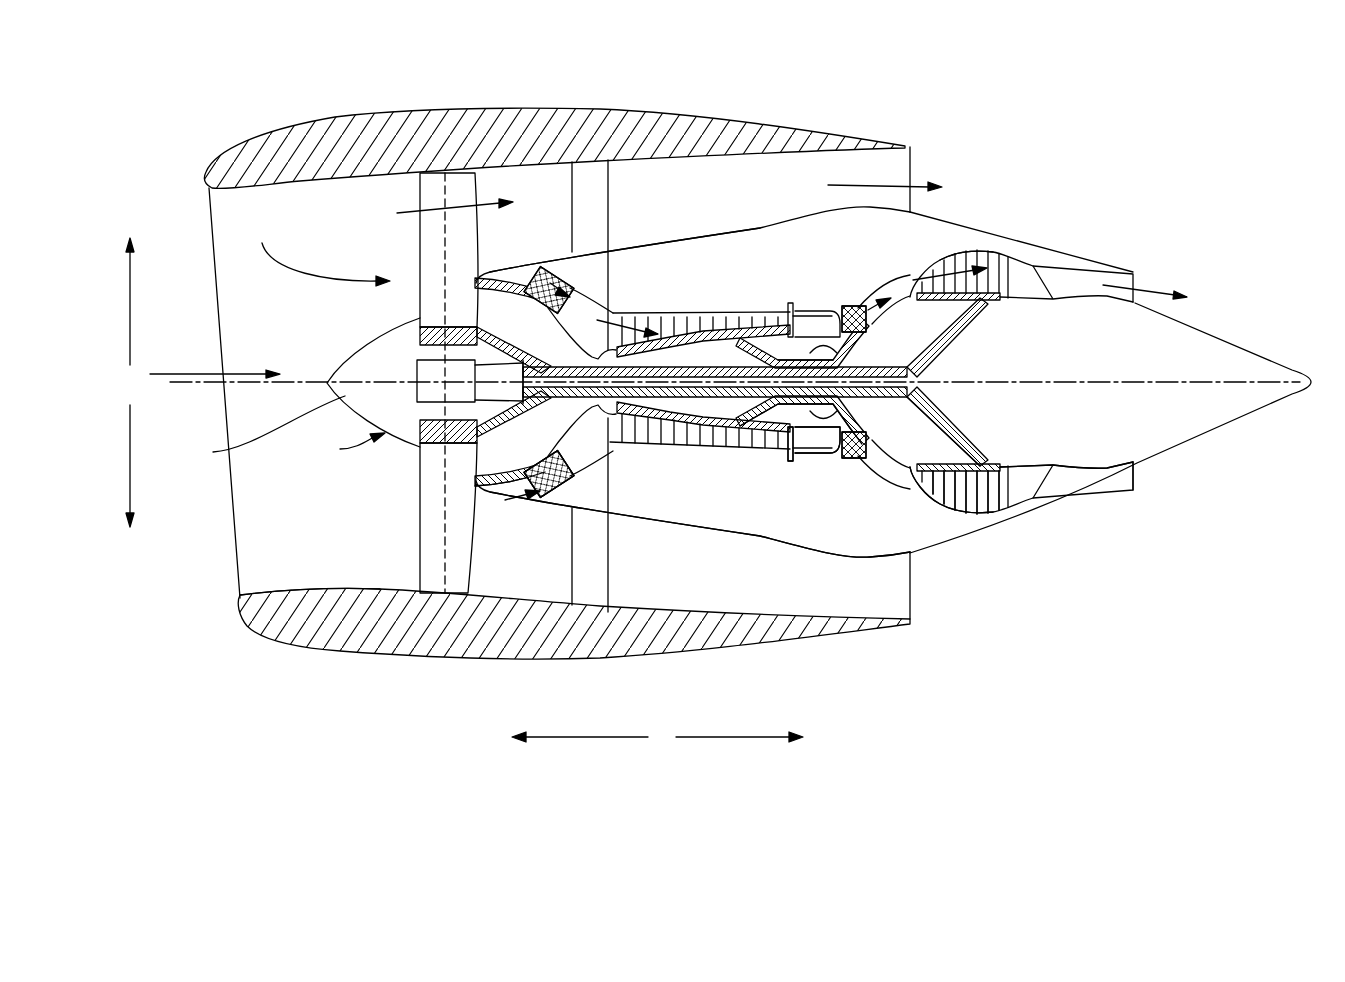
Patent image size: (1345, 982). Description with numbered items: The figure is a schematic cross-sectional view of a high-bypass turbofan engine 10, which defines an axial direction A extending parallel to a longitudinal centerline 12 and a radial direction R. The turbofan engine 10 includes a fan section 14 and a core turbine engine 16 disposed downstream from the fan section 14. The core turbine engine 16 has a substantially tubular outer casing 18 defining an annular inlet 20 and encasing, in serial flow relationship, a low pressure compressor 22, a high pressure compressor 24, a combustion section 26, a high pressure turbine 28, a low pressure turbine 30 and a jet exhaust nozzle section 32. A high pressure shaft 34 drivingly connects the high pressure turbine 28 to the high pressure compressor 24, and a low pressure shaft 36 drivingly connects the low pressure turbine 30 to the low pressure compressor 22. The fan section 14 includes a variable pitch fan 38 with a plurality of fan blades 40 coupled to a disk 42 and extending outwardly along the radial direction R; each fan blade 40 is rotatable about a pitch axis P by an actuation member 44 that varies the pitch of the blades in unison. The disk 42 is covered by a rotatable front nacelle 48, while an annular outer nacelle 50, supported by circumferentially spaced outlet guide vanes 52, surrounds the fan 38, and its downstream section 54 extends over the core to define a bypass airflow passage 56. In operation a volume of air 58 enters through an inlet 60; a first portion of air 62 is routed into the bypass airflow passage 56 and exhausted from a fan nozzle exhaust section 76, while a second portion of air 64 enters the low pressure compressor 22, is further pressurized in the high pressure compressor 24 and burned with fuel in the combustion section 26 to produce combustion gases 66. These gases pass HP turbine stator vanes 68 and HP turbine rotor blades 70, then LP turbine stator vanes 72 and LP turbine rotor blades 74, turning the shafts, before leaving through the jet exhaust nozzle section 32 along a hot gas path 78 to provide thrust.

The turbofan engine 10 is at (1052, 128).
The longitudinal centerline 12 is at (1077, 380).
The fan section 14 is at (375, 195).
The core turbine engine 16 is at (728, 268).
The outer casing 18 is at (766, 548).
The annular inlet 20 is at (520, 493).
The low pressure compressor 22 is at (570, 450).
The high pressure compressor 24 is at (650, 437).
The combustion section 26 is at (805, 450).
The high pressure turbine 28 is at (872, 453).
The low pressure turbine 30 is at (993, 512).
The jet exhaust nozzle section 32 is at (1137, 273).
The high pressure shaft 34 is at (838, 337).
The low pressure shaft 36 is at (592, 355).
The variable pitch fan 38 is at (309, 341).
The fan blades 40 is at (418, 531).
The disk 42 is at (418, 322).
The actuation member 44 is at (365, 348).
The front nacelle 48 is at (260, 436).
The outer nacelle 50 is at (463, 655).
The outlet guide vanes 52 is at (608, 192).
The downstream section of the nacelle 54 is at (853, 140).
The bypass airflow passage 56 is at (788, 204).
The volume of air 58 is at (210, 372).
The inlet 60 is at (238, 592).
The first portion of air 62 is at (432, 215).
The second portion of air 64 is at (492, 270).
The combustion gases 66 is at (950, 262).
The HP turbine stator vanes 68 is at (825, 453).
The HP turbine rotor blades 70 is at (852, 437).
The LP turbine stator vanes 72 is at (925, 493).
The LP turbine rotor blades 74 is at (928, 497).
The fan nozzle exhaust section 76 is at (897, 163).
The hot gas path 78 is at (897, 288).
The pitch axis P is at (450, 188).
The radial direction R is at (135, 382).
The axial direction A is at (657, 738).